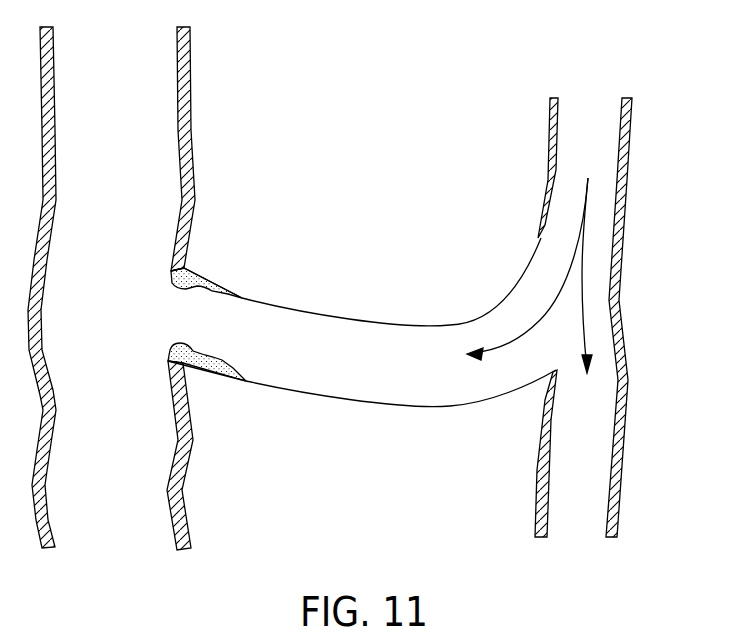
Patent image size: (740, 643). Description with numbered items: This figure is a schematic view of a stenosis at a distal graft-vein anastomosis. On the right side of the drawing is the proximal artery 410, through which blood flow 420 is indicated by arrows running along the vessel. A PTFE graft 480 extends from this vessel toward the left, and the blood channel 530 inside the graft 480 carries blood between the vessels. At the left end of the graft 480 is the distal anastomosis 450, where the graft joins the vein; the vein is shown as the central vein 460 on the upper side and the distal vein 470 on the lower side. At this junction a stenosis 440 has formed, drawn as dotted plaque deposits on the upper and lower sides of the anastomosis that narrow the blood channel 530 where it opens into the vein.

The proximal artery 410 is at (603, 107).
The blood flow 420 is at (590, 188).
The stenosis 440 is at (205, 282).
The distal anastomosis 450 is at (182, 253).
The central vein 460 is at (147, 55).
The distal vein 470 is at (150, 500).
The (PTFE) graft 480 is at (443, 410).
The blood channel 530 is at (362, 354).